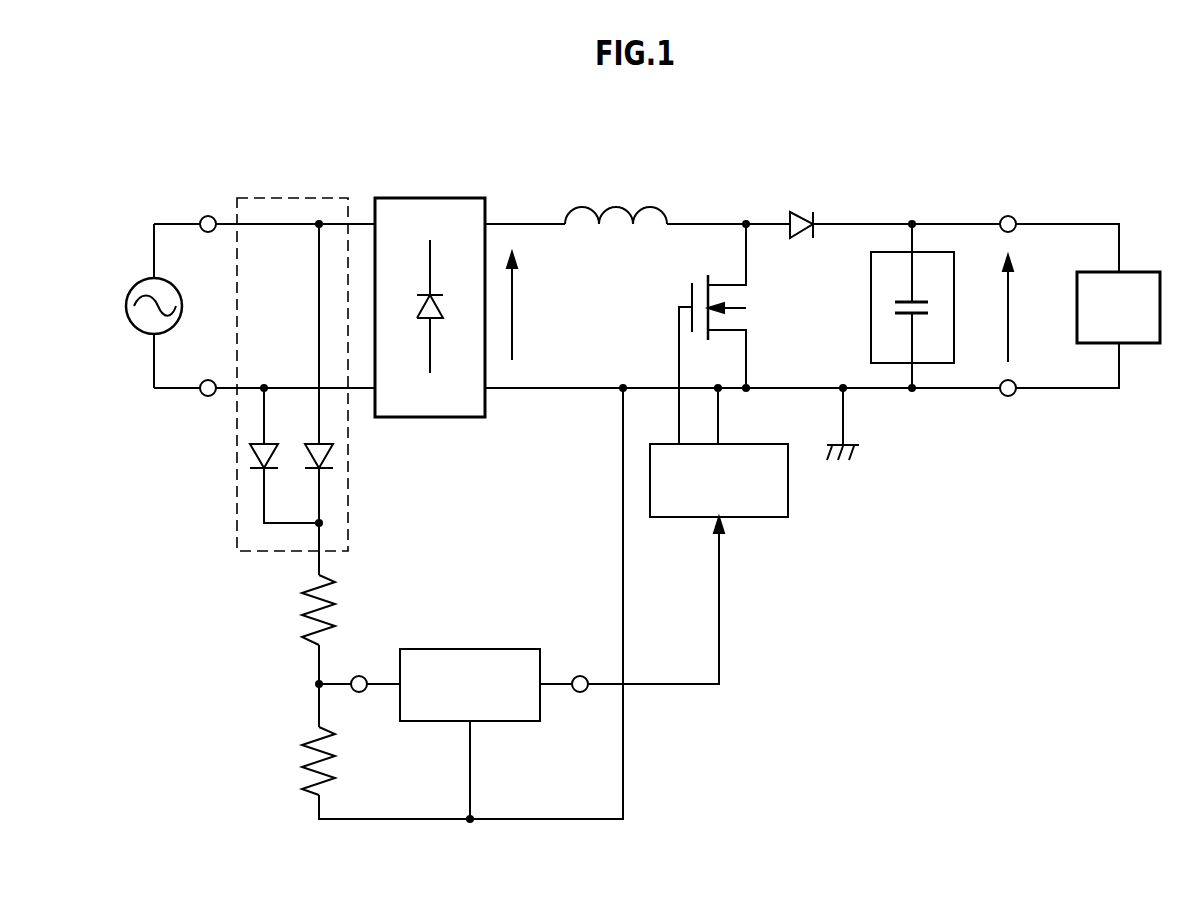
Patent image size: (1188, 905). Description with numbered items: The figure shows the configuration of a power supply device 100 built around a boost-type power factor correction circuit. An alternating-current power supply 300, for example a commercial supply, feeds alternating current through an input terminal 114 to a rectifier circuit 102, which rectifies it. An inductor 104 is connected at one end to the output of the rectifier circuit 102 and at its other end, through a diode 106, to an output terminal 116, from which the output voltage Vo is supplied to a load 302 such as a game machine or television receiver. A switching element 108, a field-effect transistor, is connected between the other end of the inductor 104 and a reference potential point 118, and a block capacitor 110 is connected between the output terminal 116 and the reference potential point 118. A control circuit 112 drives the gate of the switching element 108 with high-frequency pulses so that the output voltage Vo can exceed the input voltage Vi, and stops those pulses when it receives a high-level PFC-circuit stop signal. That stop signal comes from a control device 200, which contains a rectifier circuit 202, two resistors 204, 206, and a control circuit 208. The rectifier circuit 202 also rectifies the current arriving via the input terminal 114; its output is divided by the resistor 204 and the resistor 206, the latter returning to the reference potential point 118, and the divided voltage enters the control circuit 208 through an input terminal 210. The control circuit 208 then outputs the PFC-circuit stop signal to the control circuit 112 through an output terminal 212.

The power supply device 100 is at (768, 132).
The rectifier circuit 102 is at (448, 198).
The inductor 104 is at (647, 208).
The diode 106 is at (797, 212).
The switching element 108 is at (698, 277).
The block capacitor 110 is at (871, 283).
The control circuit 112 is at (758, 519).
The input terminal 114 is at (209, 214).
The output terminal 116 is at (1009, 214).
The reference potential point 118 is at (794, 387).
The control device 200 is at (202, 757).
The rectifier circuit 202 is at (237, 481).
The resistor 204 is at (302, 612).
The resistor 206 is at (302, 762).
The control circuit 208 is at (487, 649).
The input terminal 210 is at (362, 676).
The output terminal 212 is at (580, 676).
The alternating-current power supply 300 is at (135, 284).
The load 302 is at (1141, 272).